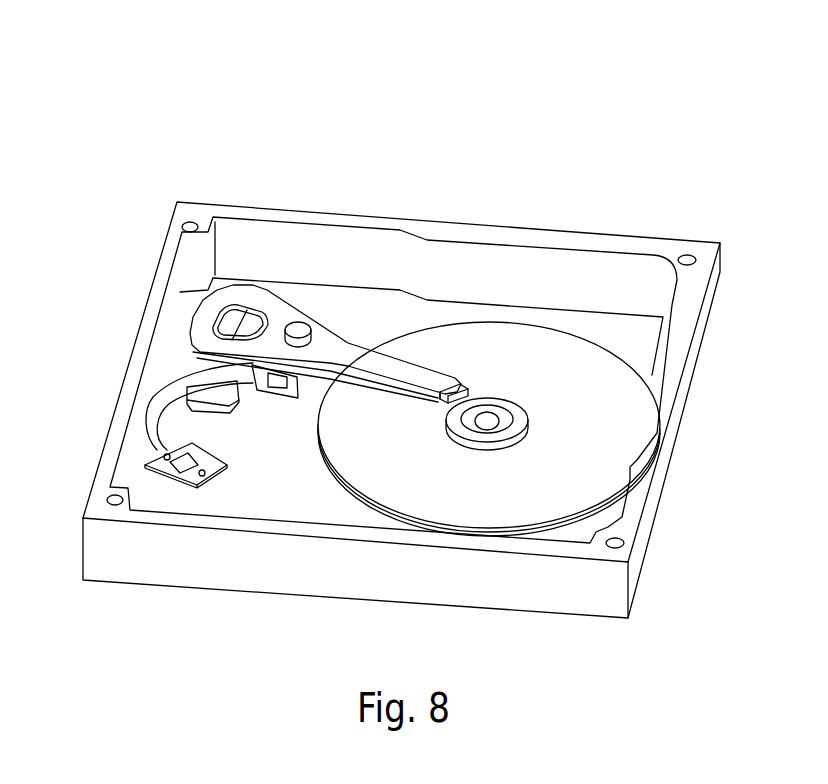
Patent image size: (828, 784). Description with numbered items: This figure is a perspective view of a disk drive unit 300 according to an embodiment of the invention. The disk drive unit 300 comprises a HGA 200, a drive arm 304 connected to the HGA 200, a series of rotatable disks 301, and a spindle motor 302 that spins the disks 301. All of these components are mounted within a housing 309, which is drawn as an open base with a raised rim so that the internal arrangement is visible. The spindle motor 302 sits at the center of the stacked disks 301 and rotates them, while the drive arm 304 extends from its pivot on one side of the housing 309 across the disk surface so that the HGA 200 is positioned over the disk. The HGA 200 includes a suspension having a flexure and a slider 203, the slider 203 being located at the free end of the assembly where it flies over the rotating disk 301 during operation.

The disk drive unit 300 is at (72, 66).
The HGA 200 is at (390, 367).
The slider 203 is at (458, 388).
The rotatable disks 301 is at (565, 363).
The spindle motor 302 is at (488, 417).
The drive arm 304 is at (323, 333).
The housing 309 is at (653, 285).